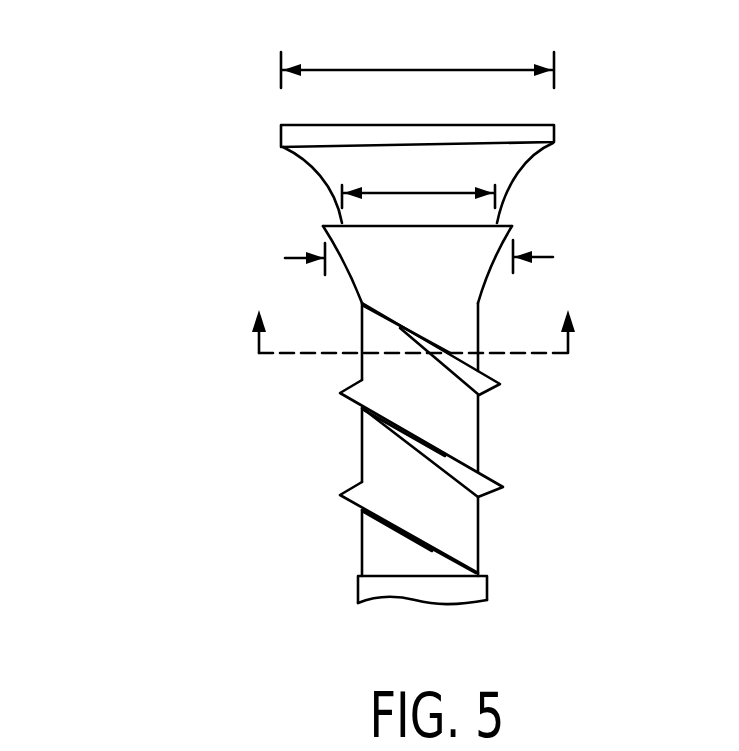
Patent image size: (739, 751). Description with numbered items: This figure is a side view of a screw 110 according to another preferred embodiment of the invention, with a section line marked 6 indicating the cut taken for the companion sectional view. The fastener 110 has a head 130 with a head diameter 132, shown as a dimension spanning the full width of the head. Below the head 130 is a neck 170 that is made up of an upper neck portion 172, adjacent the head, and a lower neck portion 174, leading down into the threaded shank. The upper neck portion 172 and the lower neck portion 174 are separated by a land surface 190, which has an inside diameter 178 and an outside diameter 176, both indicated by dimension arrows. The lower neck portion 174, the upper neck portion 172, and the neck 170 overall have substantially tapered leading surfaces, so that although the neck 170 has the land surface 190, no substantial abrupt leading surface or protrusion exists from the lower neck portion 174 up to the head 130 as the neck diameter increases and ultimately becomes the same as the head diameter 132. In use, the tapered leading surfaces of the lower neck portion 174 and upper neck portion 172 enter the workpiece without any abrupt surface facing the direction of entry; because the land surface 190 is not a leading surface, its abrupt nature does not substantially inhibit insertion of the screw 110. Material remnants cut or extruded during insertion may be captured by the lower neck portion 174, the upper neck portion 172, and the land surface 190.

The screw 110 is at (152, 271).
The head 130 is at (547, 133).
The head diameter 132 is at (380, 68).
The neck 170 is at (316, 161).
The land surface 190 is at (506, 217).
The upper neck portion 172 is at (373, 178).
The inside diameter 178 is at (455, 190).
The outside diameter 176 is at (545, 250).
The lower neck portion 174 is at (425, 262).
The section line 6- 6 is at (414, 307).